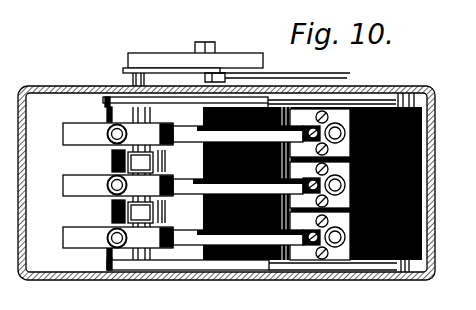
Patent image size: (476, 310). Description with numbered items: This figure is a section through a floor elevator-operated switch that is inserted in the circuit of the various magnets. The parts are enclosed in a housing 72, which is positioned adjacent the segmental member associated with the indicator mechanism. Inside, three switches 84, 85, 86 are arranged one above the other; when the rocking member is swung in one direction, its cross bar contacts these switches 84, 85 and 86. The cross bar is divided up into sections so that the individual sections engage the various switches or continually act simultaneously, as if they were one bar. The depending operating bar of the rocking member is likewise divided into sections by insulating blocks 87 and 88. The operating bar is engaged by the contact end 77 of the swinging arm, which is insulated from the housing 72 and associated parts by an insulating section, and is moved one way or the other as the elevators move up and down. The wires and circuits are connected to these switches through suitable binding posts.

The housing 72 is at (393, 84).
The contact end 77 is at (172, 212).
The switch 84 is at (163, 122).
The switch 85 is at (175, 183).
The switch 86 is at (178, 237).
The insulating block 87 is at (105, 160).
The insulating block 88 is at (112, 212).